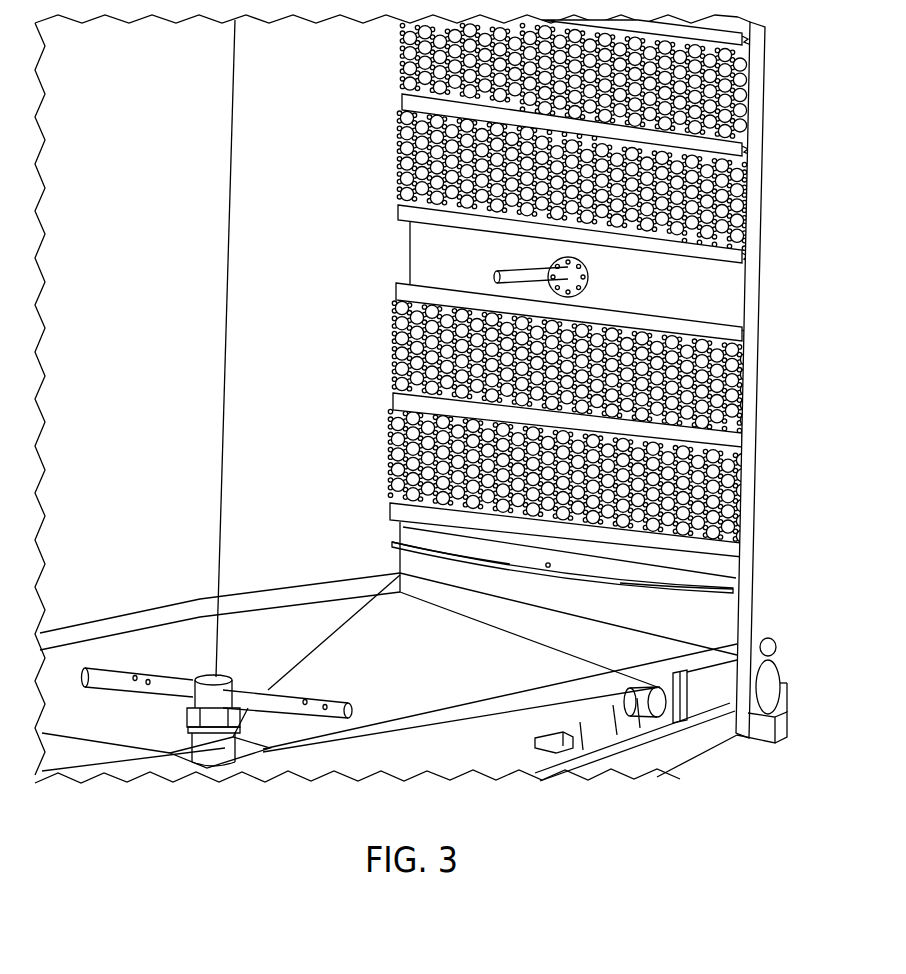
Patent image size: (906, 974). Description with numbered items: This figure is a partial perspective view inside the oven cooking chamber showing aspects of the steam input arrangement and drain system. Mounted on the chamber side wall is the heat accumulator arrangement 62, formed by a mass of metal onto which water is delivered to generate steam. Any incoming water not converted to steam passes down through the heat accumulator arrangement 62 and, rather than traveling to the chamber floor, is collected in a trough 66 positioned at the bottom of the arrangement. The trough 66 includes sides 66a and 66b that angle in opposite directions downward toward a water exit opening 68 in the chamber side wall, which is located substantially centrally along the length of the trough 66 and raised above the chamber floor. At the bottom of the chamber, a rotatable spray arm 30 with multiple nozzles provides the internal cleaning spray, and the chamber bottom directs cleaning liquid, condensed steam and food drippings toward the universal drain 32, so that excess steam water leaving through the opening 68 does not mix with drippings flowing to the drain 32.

The rotatable spray arm 30 is at (120, 674).
The drain 32 is at (260, 738).
The heat accumulator arrangement 62 is at (730, 212).
The trough 66 is at (547, 584).
The trough side 66a is at (442, 568).
The trough side 66b is at (670, 592).
The opening 68 is at (527, 550).